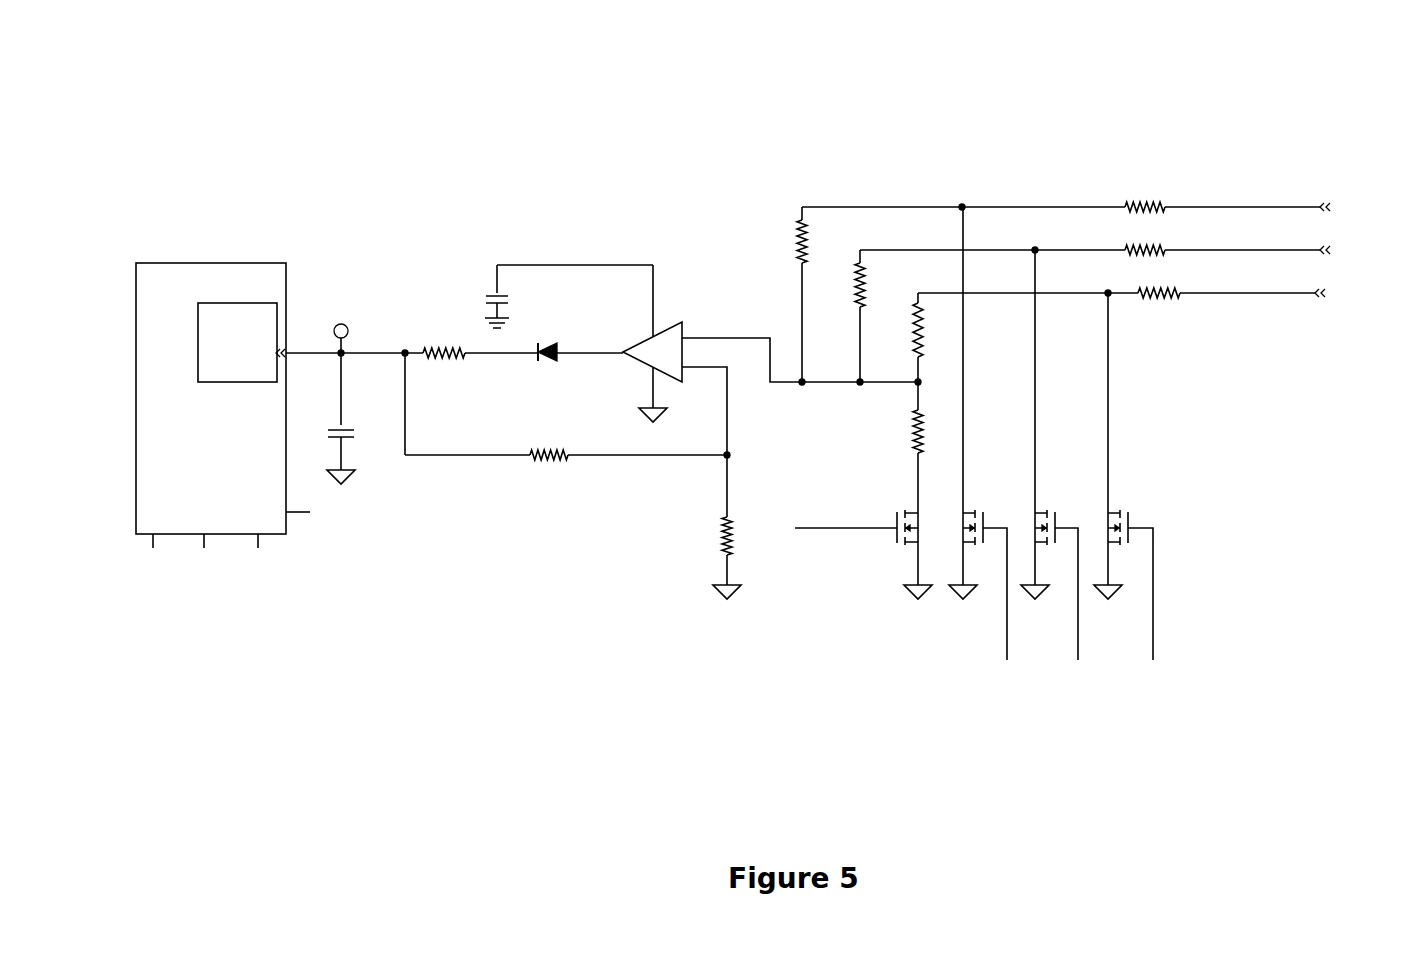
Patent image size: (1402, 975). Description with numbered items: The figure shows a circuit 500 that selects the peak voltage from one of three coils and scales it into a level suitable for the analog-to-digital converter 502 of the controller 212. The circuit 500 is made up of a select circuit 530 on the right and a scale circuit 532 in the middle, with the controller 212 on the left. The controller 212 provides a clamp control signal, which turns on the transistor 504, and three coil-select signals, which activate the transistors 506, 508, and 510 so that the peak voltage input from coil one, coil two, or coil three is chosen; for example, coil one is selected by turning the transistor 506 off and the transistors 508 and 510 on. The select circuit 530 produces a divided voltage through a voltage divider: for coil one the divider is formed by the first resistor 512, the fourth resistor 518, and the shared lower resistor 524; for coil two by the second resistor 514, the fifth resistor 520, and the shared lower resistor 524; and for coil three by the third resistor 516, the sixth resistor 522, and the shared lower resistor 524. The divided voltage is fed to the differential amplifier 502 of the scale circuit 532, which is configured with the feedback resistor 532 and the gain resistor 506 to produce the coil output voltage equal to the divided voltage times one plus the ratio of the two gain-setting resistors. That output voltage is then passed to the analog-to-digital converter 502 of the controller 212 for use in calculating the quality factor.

The circuit 500 is at (315, 118).
The controller 212 is at (258, 426).
The ADC / differential amplifier 502 is at (213, 325).
The scale circuit 532 is at (563, 384).
The transistor 504 is at (538, 457).
The transistor / resistor R2 506 is at (728, 555).
The transistor 508 is at (1077, 497).
The transistor 510 is at (1130, 527).
The resistor R3 512 is at (1162, 196).
The resistor R4 514 is at (1140, 249).
The resistor R5 516 is at (1177, 303).
The resistor R6 518 is at (803, 228).
The resistor R7 520 is at (860, 297).
The resistor R8 522 is at (920, 322).
The resistor R9 524 is at (915, 437).
The select circuit 530 is at (1266, 284).